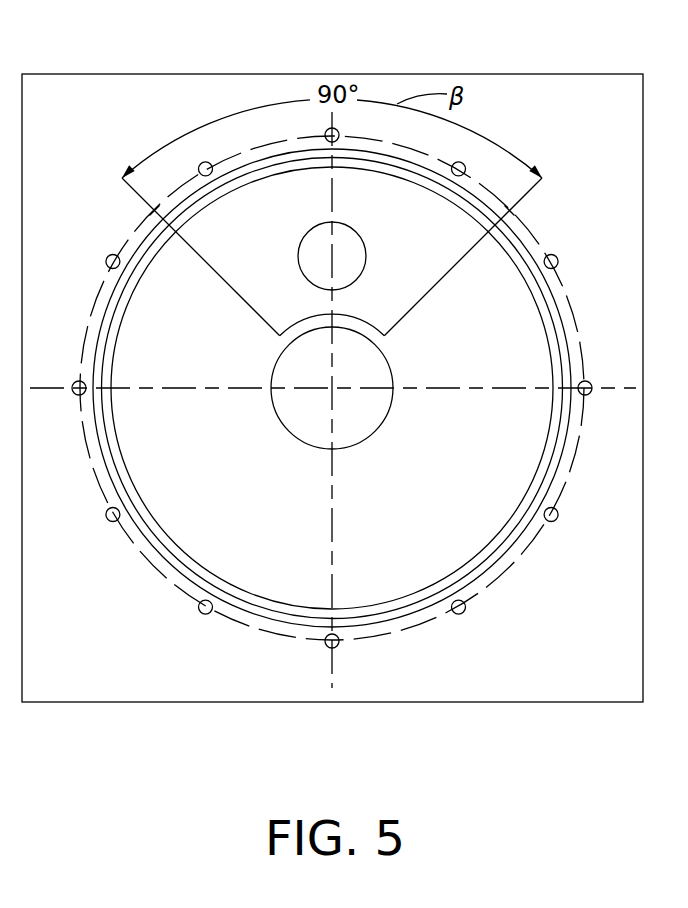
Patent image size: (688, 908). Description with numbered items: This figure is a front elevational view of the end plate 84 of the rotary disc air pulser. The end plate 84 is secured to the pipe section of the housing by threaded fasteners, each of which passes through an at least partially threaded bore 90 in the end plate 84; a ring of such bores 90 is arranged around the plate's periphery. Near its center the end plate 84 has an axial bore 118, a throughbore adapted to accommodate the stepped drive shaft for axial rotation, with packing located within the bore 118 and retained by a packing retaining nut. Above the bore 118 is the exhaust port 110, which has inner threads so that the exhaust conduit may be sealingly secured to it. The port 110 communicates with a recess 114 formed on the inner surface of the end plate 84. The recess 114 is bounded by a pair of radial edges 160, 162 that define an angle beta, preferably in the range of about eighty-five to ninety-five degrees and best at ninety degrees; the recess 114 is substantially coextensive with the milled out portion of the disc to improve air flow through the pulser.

The end plate 84 is at (70, 74).
The at least partially threaded bore 90 is at (108, 519).
The exhaust port 110 is at (300, 242).
The recess 114 is at (412, 226).
The axial bore 118 is at (372, 433).
The radial edge 160 is at (251, 305).
The radial edge 162 is at (437, 282).